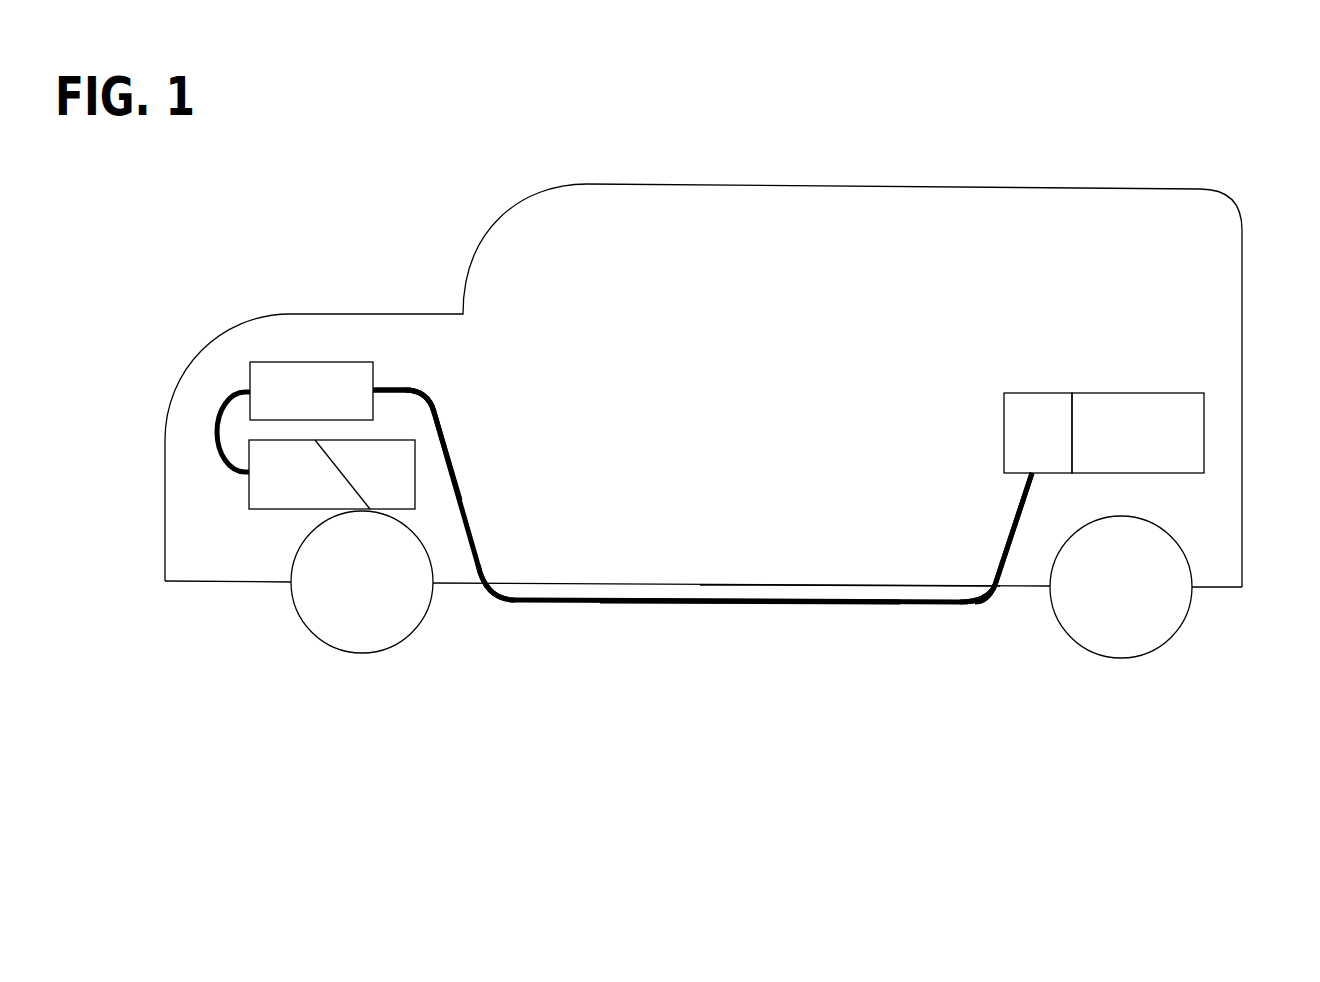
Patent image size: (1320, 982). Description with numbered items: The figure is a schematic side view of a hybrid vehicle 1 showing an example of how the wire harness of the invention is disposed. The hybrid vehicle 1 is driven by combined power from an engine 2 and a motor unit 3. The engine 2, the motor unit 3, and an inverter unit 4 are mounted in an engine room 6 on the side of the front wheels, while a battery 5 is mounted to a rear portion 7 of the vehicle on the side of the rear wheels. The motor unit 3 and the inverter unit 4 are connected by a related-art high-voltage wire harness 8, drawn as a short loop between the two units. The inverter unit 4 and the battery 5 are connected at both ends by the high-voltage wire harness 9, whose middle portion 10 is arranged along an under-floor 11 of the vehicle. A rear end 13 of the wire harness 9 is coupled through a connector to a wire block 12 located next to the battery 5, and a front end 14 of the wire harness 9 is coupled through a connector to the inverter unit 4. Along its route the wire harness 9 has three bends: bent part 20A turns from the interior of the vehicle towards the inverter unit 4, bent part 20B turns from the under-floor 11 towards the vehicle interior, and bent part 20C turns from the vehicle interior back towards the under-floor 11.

The hybrid vehicle 1 is at (368, 194).
The engine 2 is at (390, 495).
The motor unit 3 is at (278, 493).
The inverter unit 4 is at (302, 383).
The battery 5 is at (1143, 422).
The engine room 6 is at (193, 535).
The rear portion 7 is at (1215, 512).
The high-voltage wire harness 8 is at (218, 423).
The wire harness 9 is at (697, 604).
The middle portion 10 is at (755, 607).
The under-floor 11 is at (858, 588).
The wire block 12 is at (1035, 422).
The rear end 13 is at (1022, 489).
The front end 14 is at (398, 387).
The bent part 20A is at (430, 391).
The bent part 20B is at (502, 577).
The bent part 20C is at (970, 579).